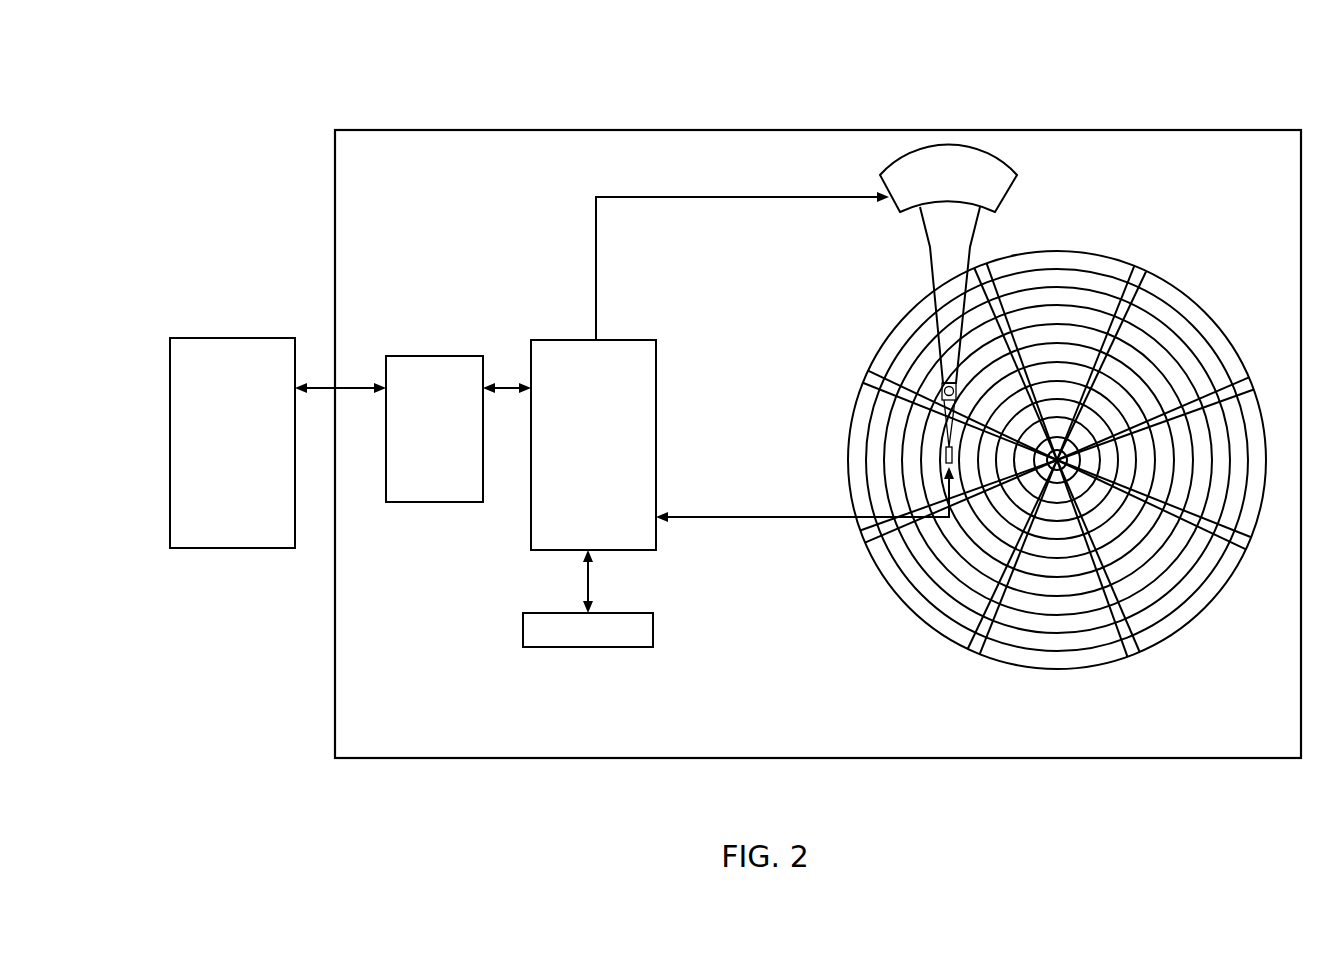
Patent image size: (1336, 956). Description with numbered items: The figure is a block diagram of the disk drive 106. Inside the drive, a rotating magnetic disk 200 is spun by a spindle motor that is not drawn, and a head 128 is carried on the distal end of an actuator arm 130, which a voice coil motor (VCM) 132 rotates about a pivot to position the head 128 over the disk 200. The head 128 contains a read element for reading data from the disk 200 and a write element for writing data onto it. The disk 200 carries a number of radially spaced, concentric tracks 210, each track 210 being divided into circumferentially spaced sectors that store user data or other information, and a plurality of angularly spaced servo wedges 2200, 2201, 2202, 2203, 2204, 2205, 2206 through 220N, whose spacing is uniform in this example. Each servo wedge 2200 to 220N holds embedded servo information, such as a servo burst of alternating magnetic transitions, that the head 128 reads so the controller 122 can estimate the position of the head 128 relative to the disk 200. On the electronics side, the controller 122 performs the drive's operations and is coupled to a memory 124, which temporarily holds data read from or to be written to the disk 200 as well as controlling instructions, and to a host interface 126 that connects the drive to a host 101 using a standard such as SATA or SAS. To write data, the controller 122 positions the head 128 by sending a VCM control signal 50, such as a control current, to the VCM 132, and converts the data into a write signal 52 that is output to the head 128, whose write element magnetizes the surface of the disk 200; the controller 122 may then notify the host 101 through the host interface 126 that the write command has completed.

The disk drive 106 is at (1123, 130).
The host 101 is at (232, 548).
The host interface 126 is at (436, 502).
The controller 122 is at (531, 545).
The memory 124 is at (577, 647).
The VCM control signal 50 is at (741, 197).
The write signal 52 is at (741, 517).
The voice coil motor (VCM) 132 is at (898, 206).
The actuator arm 130 is at (934, 280).
The head 128 is at (935, 455).
The rotating magnetic disk 200 is at (1210, 296).
The track 210 is at (1057, 282).
The servo wedge 220N is at (984, 276).
The servo wedge 2200 is at (1141, 276).
The servo wedge 2201 is at (1248, 384).
The servo wedge 2202 is at (1248, 540).
The servo wedge 2203 is at (1134, 650).
The servo wedge 2204 is at (975, 652).
The servo wedge 2205 is at (868, 540).
The servo wedge 2206 is at (872, 378).